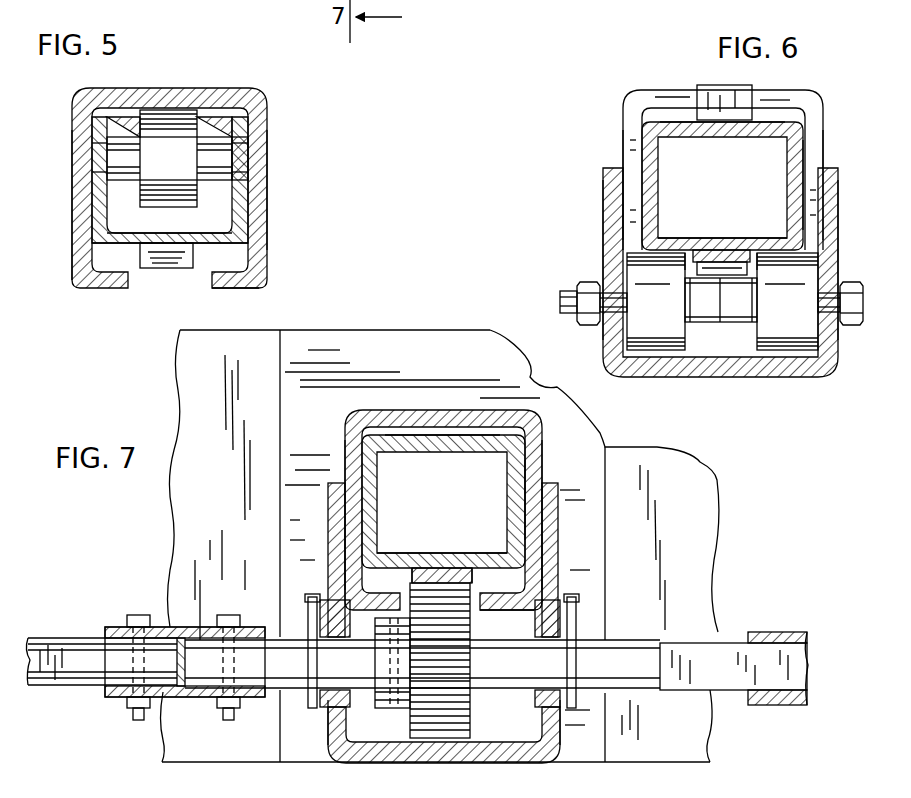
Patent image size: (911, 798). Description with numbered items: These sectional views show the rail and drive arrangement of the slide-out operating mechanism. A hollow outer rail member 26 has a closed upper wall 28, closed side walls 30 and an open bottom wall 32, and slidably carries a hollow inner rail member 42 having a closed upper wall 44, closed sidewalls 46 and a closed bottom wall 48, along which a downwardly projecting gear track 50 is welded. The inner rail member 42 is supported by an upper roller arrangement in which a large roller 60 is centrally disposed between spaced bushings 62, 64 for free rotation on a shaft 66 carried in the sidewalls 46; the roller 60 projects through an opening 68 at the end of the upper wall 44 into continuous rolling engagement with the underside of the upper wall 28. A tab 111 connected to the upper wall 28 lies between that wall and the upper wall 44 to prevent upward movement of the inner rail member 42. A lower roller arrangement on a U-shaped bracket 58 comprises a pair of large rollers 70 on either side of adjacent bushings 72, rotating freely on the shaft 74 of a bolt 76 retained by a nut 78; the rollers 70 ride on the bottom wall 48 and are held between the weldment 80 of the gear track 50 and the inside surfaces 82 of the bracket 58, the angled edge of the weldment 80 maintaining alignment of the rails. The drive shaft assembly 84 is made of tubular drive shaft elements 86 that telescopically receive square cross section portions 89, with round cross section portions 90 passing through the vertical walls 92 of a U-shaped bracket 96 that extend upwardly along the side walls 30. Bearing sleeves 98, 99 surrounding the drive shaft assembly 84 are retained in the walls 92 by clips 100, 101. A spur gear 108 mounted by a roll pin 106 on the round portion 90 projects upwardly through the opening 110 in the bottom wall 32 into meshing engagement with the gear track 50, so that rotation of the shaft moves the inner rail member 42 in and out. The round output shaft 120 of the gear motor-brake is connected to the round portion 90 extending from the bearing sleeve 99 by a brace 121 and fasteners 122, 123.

In FIG. 5, the outer rail member 26 is at (198, 84).
In FIG. 6, the outer rail member 26 is at (680, 87).
In FIG. 7, the outer rail member 26 is at (442, 407).
In FIG. 5, the closed upper wall 28 is at (252, 90).
In FIG. 6, the closed upper wall 28 is at (640, 90).
In FIG. 7, the closed upper wall 28 is at (364, 414).
In FIG. 5, the closed side walls 30 is at (265, 155).
In FIG. 6, the closed side walls 30 is at (630, 120).
In FIG. 7, the closed side walls 30 is at (350, 434).
In FIG. 5, the open bottom wall 32 is at (245, 284).
In FIG. 7, the open bottom wall 32 is at (487, 606).
In FIG. 5, the inner rail member 42 is at (97, 242).
In FIG. 6, the inner rail member 42 is at (795, 157).
In FIG. 7, the inner rail member 42 is at (470, 445).
In FIG. 6, the closed upper wall 44 is at (770, 126).
In FIG. 7, the closed upper wall 44 is at (405, 440).
In FIG. 5, the closed sidewalls 46 is at (238, 190).
In FIG. 6, the closed sidewalls 46 is at (650, 160).
In FIG. 7, the closed sidewalls 46 is at (372, 484).
In FIG. 5, the closed bottom wall 48 is at (205, 232).
In FIG. 6, the closed bottom wall 48 is at (700, 240).
In FIG. 7, the closed bottom wall 48 is at (412, 555).
In FIG. 5, the gear track 50 is at (168, 266).
In FIG. 6, the gear track 50 is at (725, 248).
In FIG. 7, the gear track 50 is at (457, 566).
In FIG. 6, the U-shaped bracket 58 is at (740, 380).
In FIG. 5, the large roller 60 is at (166, 153).
In FIG. 5, the bushing 62 is at (115, 152).
In FIG. 5, the bushing 64 is at (226, 140).
In FIG. 5, the shaft 66 is at (240, 160).
In FIG. 5, the opening 68 is at (205, 118).
In FIG. 6, the large rollers 70 is at (765, 310).
In FIG. 6, the bushings 72 is at (700, 305).
In FIG. 6, the shaft 74 is at (562, 300).
In FIG. 6, the bolt 76 is at (848, 328).
In FIG. 6, the nut 78 is at (586, 288).
In FIG. 6, the weldment 80 is at (676, 255).
In FIG. 6, the inside surfaces 82 is at (612, 235).
In FIG. 7, the drive shaft assembly 84 is at (272, 625).
In FIG. 7, the tubular drive shaft elements 86 is at (800, 632).
In FIG. 7, the square cross section portion 89 is at (710, 700).
In FIG. 7, the round cross section portion 90 is at (210, 660).
In FIG. 7, the vertical walls 92 is at (333, 506).
In FIG. 7, the U-shaped bracket 96 is at (545, 764).
In FIG. 7, the bearing sleeve 98 is at (562, 712).
In FIG. 7, the bearing sleeve 99 is at (330, 706).
In FIG. 7, the clip 100 is at (576, 600).
In FIG. 7, the clip 101 is at (315, 598).
In FIG. 7, the roll pin 106 is at (396, 710).
In FIG. 7, the spur gear 108 is at (455, 700).
In FIG. 7, the opening 110 is at (410, 575).
In FIG. 6, the tab 111 is at (762, 86).
In FIG. 7, the output shaft 120 is at (95, 655).
In FIG. 7, the brace 121 is at (112, 698).
In FIG. 7, the fastener 122 is at (220, 613).
In FIG. 7, the fastener 123 is at (135, 710).